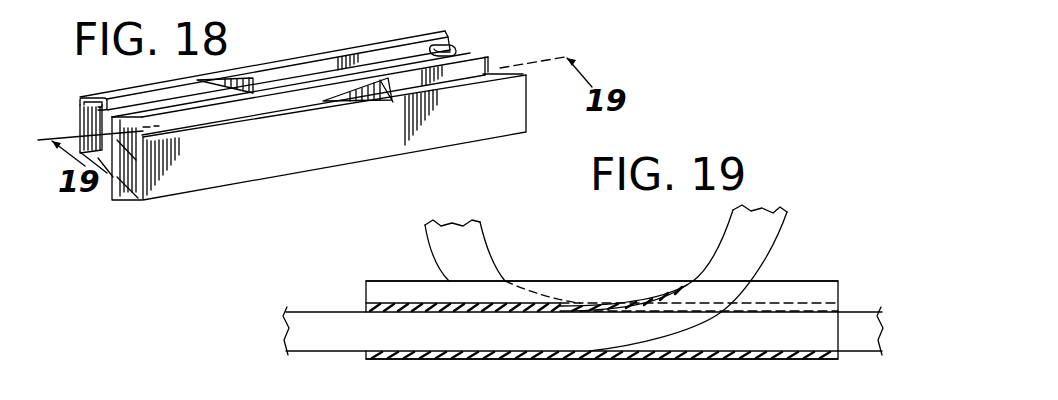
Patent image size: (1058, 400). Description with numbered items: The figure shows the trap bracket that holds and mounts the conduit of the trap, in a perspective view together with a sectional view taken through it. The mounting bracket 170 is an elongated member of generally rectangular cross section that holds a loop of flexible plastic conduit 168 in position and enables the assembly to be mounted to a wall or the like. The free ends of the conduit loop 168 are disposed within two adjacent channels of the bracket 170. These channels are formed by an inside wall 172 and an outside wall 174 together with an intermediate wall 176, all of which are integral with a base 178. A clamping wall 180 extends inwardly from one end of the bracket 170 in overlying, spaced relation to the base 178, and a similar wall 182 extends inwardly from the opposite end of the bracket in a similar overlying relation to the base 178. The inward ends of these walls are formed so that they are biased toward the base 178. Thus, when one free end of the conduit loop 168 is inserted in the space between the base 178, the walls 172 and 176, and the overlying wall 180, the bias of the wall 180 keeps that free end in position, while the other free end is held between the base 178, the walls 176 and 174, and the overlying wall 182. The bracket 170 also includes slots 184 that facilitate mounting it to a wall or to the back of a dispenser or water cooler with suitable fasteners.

In FIG. 19, the flexible plastic conduit 168 is at (486, 256).
In FIG. 18, the mounting bracket 170 is at (352, 167).
In FIG. 19, the mounting bracket 170 is at (795, 362).
In FIG. 18, the inside wall 172 is at (413, 44).
In FIG. 18, the outside wall 174 is at (505, 133).
In FIG. 18, the intermediate wall 176 is at (481, 61).
In FIG. 19, the intermediate wall 176 is at (813, 292).
In FIG. 18, the base 178 is at (124, 186).
In FIG. 19, the base 178 is at (411, 361).
In FIG. 18, the clamping wall 180 is at (230, 86).
In FIG. 18, the wall 182 is at (383, 89).
In FIG. 19, the wall 182 is at (397, 302).
In FIG. 18, the slots 184 is at (80, 98).